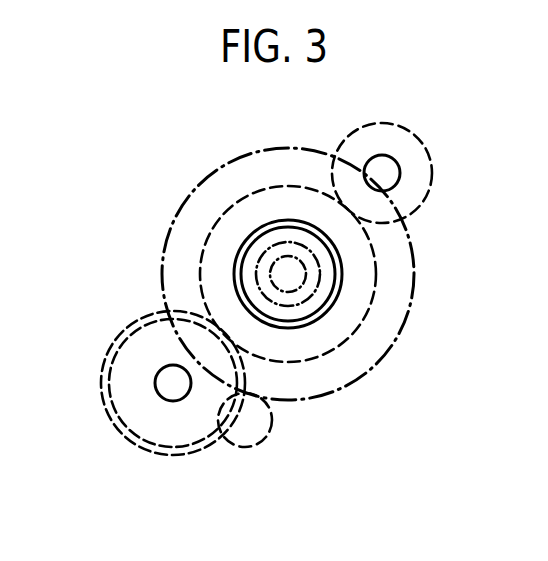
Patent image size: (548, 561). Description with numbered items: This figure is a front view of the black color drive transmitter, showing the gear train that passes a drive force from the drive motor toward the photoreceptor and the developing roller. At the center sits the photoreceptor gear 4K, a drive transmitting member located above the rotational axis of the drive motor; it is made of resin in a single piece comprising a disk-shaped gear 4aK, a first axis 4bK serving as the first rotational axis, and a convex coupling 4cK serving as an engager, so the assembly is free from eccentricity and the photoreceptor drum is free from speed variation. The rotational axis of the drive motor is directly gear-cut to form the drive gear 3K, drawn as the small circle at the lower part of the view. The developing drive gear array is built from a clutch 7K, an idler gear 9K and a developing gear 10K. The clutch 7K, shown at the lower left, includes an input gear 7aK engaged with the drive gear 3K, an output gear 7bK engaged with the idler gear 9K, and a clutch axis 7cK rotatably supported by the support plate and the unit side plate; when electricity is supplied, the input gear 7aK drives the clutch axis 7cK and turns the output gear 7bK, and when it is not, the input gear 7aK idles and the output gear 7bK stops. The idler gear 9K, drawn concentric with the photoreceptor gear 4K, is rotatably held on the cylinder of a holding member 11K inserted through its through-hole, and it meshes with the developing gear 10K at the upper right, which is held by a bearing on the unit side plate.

The photoreceptor gear 4K is at (339, 297).
The disk-shaped gear 4aK is at (399, 342).
The first axis 4bK is at (306, 296).
The convex coupling 4cK is at (307, 264).
The holding member 11K is at (332, 308).
The idler gear 9K is at (262, 188).
The developing gear 10K is at (428, 152).
The clutch 7K is at (137, 424).
The input gear 7aK is at (113, 419).
The output gear 7bK is at (101, 389).
The clutch axis 7cK is at (180, 402).
The drive gear 3K is at (268, 440).